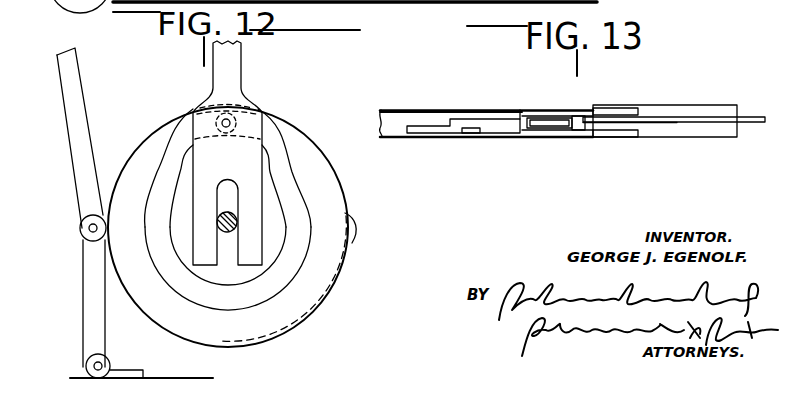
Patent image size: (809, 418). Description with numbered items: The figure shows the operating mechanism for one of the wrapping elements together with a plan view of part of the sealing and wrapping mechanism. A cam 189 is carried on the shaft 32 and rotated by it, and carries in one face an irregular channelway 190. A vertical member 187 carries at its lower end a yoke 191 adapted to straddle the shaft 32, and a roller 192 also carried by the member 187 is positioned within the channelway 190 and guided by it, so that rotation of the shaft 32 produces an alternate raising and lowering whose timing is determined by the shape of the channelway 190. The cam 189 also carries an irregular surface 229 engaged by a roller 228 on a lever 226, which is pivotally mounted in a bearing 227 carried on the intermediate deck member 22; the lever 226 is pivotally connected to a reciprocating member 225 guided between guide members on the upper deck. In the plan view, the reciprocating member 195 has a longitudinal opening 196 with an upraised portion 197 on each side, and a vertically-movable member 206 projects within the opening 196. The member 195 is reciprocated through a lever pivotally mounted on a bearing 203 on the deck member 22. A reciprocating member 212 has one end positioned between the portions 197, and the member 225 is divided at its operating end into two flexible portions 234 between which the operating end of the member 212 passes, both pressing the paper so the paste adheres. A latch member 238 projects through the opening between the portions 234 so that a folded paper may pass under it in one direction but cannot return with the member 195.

In FIG. 12, the intermediate deck member 22 is at (163, 379).
In FIG. 13, the intermediate deck member 22 is at (457, 0).
In FIG. 12, the shaft 32 is at (227, 232).
In FIG. 12, the vertical member 187 is at (238, 67).
In FIG. 12, the cam 189 is at (313, 149).
In FIG. 12, the irregular channelway 190 is at (303, 189).
In FIG. 12, the yoke 191 is at (256, 238).
In FIG. 12, the roller 192 is at (232, 123).
In FIG. 13, the reciprocating member 195 is at (566, 113).
In FIG. 13, the longitudinal opening 196 is at (588, 131).
In FIG. 13, the upraised portion 197 is at (620, 108).
In FIG. 12, the bearing 203 is at (107, 0).
In FIG. 13, the vertically-movable member 206 is at (565, 129).
In FIG. 13, the reciprocating member 212 is at (743, 116).
In FIG. 13, the reciprocating member 225 is at (398, 119).
In FIG. 12, the lever 226 is at (68, 110).
In FIG. 12, the bearing 227 is at (112, 368).
In FIG. 12, the roller 228 is at (84, 233).
In FIG. 12, the irregular surface 229 is at (353, 229).
In FIG. 13, the portions 234 is at (489, 111).
In FIG. 13, the latch member 238 is at (465, 133).